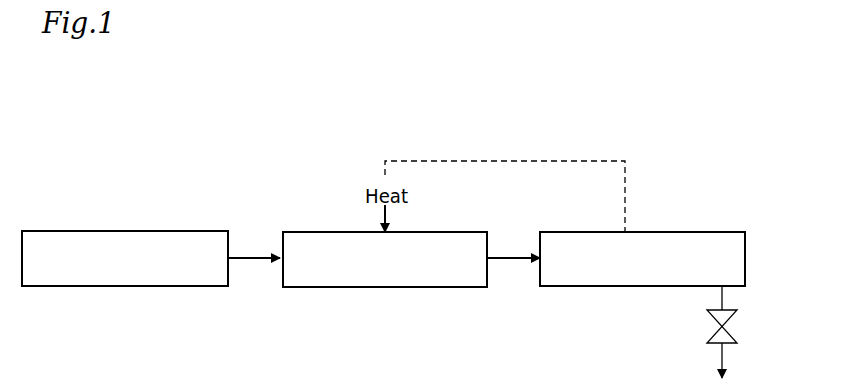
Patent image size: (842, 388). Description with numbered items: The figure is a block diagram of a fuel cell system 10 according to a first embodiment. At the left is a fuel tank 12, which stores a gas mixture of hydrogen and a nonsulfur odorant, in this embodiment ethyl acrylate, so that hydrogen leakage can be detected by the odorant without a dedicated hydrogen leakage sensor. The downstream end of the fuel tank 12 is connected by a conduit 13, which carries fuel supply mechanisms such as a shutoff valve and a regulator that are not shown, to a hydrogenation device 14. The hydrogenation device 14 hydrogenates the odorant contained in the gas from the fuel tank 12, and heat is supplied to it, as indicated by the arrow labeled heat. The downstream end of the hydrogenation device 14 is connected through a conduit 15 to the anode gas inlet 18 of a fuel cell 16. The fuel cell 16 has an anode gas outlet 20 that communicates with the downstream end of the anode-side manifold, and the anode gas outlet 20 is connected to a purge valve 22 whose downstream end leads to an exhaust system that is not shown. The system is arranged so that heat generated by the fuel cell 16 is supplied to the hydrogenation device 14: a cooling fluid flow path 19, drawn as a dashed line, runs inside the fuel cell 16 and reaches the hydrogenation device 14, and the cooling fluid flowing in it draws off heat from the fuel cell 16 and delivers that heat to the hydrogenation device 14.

The fuel cell system 10 is at (213, 128).
The fuel tank 12 is at (140, 285).
The conduit 13 is at (250, 252).
The hydrogenation device 14 is at (398, 285).
The conduit 15 is at (508, 252).
The fuel cell 16 is at (655, 285).
The anode gas inlet 18 is at (528, 262).
The cooling fluid flow path 19 is at (567, 160).
The anode gas outlet 20 is at (725, 290).
The purge valve 22 is at (720, 325).